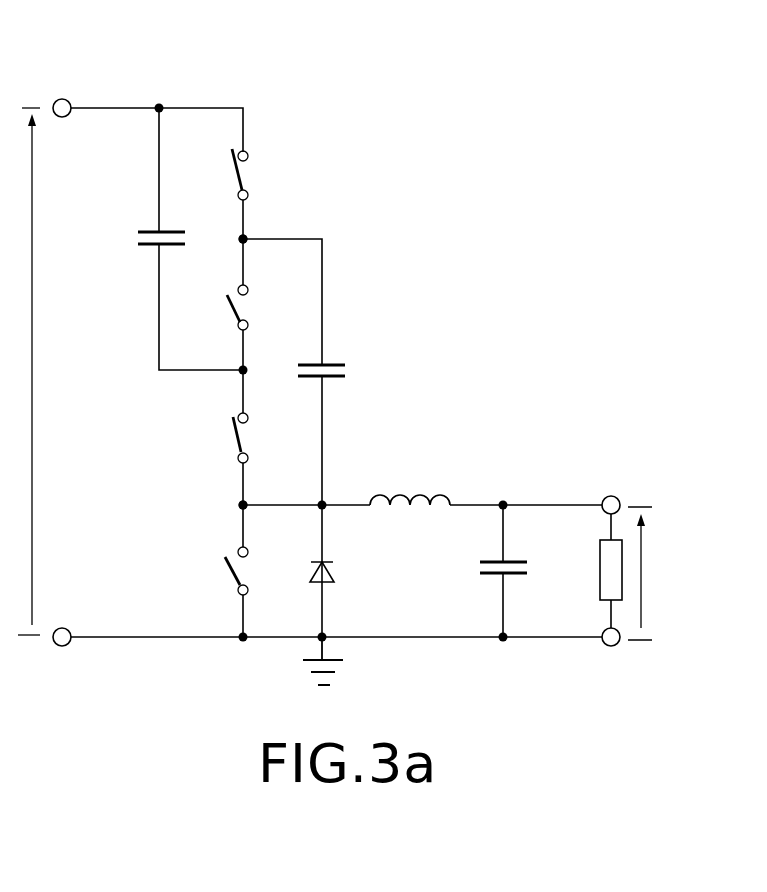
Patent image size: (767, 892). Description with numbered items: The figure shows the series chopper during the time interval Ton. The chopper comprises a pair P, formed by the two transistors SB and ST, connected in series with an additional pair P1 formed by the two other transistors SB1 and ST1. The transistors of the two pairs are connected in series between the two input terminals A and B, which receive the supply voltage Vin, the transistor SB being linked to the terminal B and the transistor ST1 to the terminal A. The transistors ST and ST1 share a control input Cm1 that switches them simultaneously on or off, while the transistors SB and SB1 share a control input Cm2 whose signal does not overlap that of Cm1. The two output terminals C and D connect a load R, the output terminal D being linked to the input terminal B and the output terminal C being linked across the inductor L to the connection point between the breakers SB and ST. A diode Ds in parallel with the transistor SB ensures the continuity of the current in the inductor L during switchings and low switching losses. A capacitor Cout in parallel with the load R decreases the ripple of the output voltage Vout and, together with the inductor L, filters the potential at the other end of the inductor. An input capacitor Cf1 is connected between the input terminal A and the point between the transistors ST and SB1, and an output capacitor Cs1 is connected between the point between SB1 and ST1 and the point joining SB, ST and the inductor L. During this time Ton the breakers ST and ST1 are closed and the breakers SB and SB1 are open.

The input terminal A is at (55, 103).
The input terminal B is at (60, 648).
The output terminal C is at (610, 495).
The output terminal D is at (610, 648).
The supply voltage Vin is at (48, 369).
The output voltage Vout is at (659, 573).
The transistor ST1 is at (231, 172).
The transistor SB1 is at (232, 312).
The transistor ST is at (231, 440).
The transistor SB is at (226, 576).
The pair P is at (234, 507).
The additional pair P1 is at (234, 246).
The control input Cm1 is at (300, 172).
The control input Cm2 is at (298, 302).
The input capacitor Cf1 is at (138, 242).
The output capacitor Cs1 is at (328, 373).
The capacitor Cout is at (490, 569).
The inductor L is at (405, 494).
The diode Ds is at (334, 572).
The load R is at (600, 578).